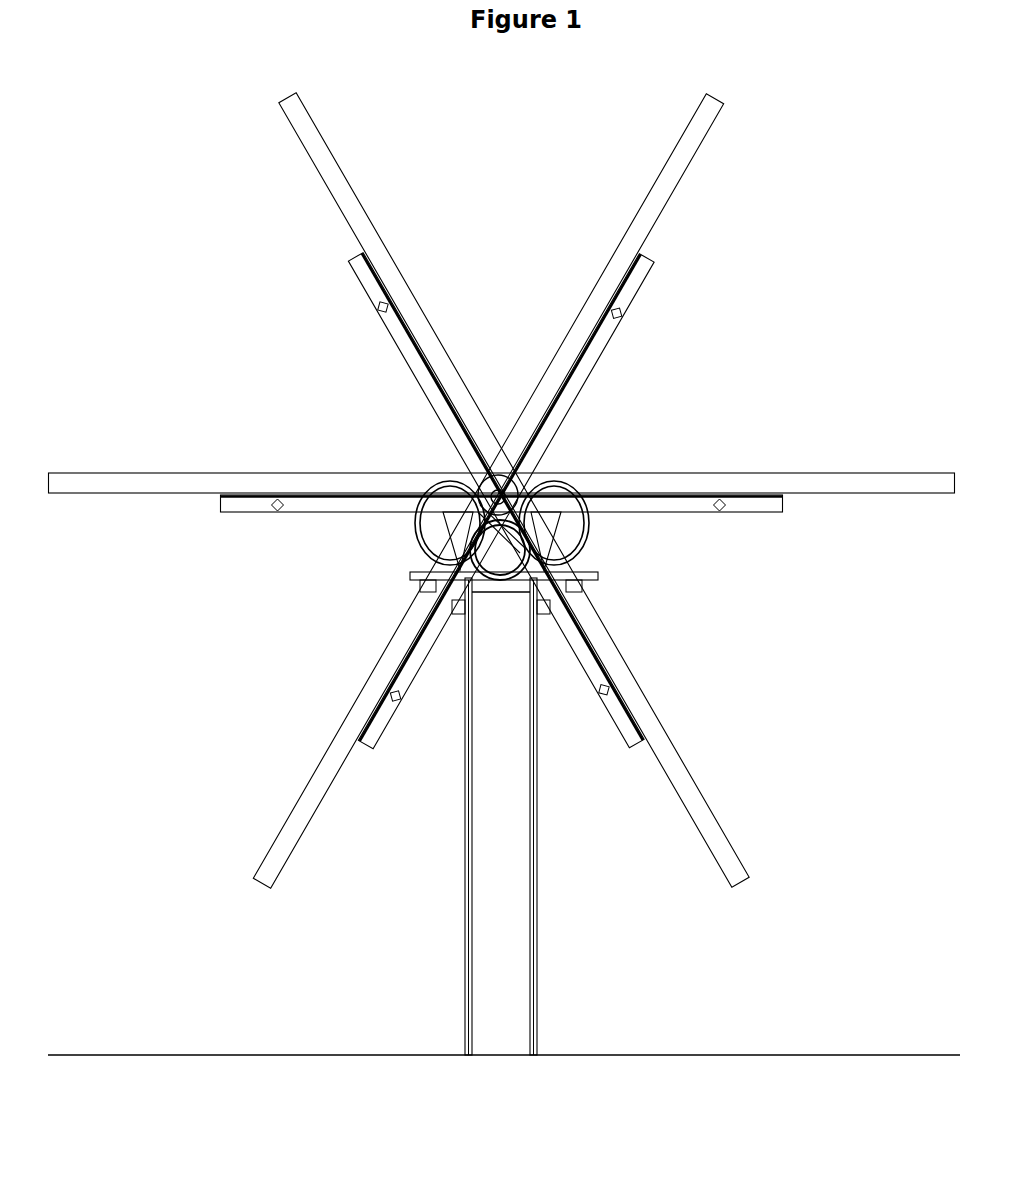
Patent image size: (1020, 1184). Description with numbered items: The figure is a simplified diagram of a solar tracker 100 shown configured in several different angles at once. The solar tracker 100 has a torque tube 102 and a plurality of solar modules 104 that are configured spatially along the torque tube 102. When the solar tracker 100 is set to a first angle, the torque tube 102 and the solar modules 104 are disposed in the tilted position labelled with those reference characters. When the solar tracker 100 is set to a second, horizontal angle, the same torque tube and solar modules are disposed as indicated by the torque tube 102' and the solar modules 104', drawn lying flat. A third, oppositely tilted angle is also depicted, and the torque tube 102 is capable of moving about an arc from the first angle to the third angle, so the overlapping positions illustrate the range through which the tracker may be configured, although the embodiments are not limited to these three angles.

The solar tracker 100 is at (874, 163).
The torque tube 102 is at (400, 525).
The torque tube 102' is at (444, 541).
The solar modules 104 is at (505, 495).
The solar modules 104' is at (502, 457).